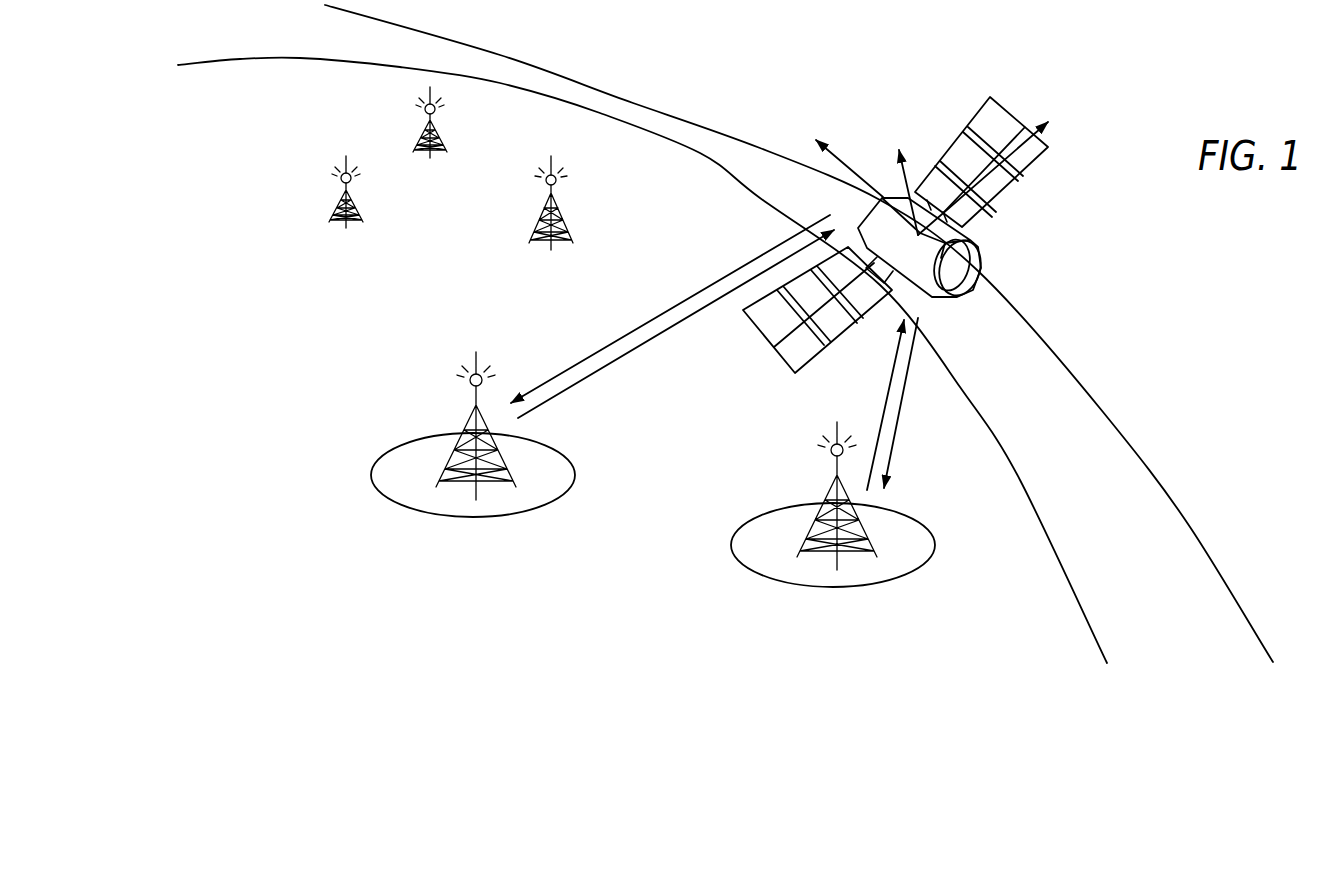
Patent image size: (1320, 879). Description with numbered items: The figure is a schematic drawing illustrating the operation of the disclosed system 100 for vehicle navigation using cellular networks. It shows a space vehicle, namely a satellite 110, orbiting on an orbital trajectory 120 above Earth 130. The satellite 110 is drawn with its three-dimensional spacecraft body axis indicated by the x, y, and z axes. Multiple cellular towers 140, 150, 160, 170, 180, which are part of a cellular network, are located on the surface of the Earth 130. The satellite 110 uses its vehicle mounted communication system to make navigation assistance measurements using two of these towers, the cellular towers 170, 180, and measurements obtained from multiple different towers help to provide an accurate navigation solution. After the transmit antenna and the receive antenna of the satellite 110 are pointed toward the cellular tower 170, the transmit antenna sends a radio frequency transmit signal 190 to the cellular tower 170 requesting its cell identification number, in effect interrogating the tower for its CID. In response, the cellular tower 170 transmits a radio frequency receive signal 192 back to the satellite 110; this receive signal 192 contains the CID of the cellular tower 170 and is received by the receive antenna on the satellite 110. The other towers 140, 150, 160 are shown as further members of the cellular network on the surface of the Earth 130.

The system 100 is at (1178, 627).
The space vehicle 110 is at (1020, 108).
The orbital trajectory 120 is at (1198, 529).
The Earth 130 is at (496, 77).
The cellular tower 140 is at (330, 210).
The cellular tower 150 is at (410, 132).
The cellular tower 160 is at (575, 215).
The cellular tower 170 is at (457, 423).
The cellular tower 180 is at (819, 492).
The transmit signal 190 is at (641, 327).
The receive signal 192 is at (653, 341).